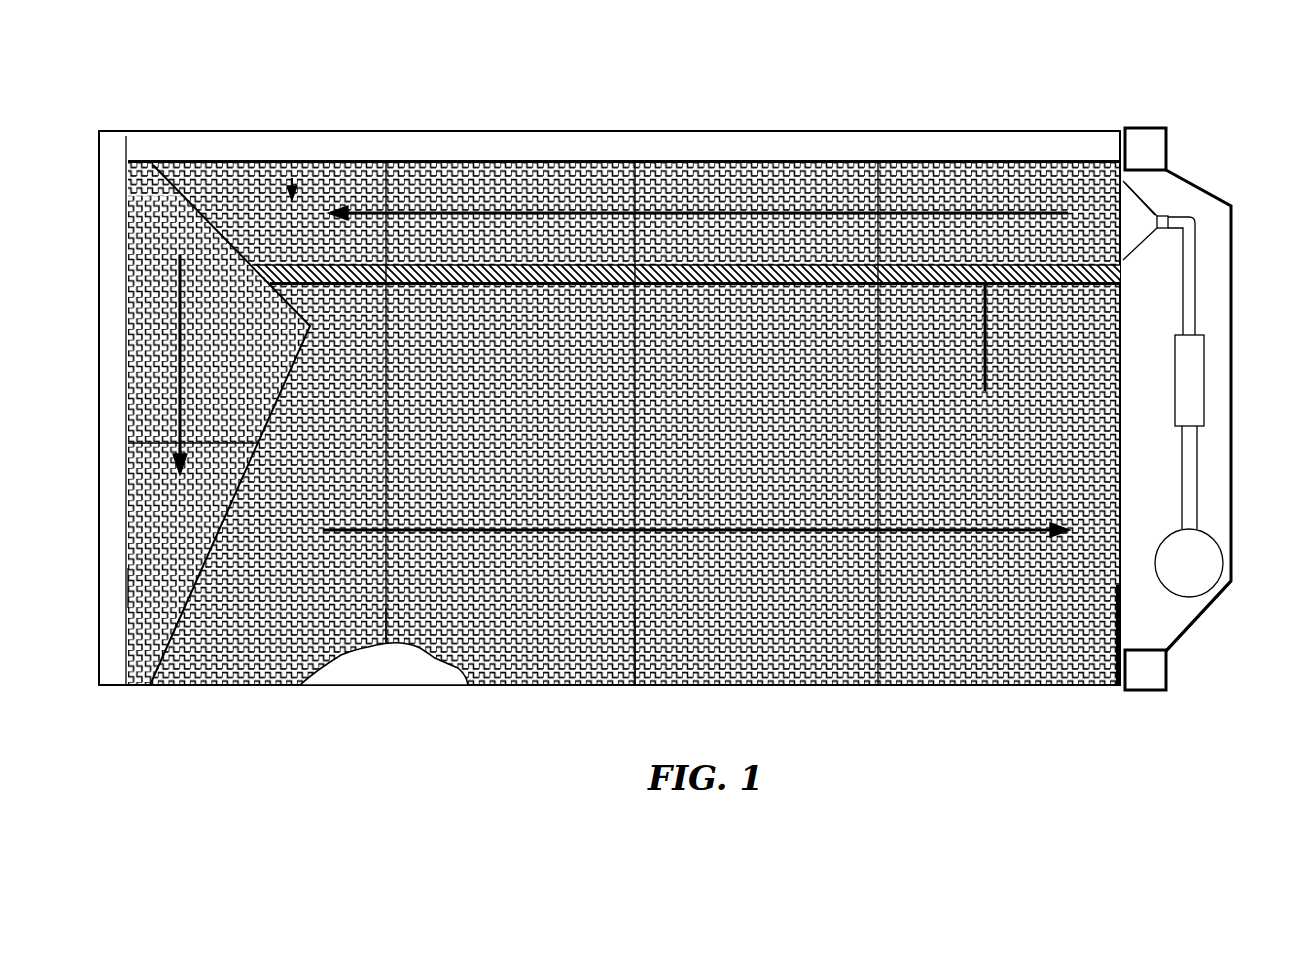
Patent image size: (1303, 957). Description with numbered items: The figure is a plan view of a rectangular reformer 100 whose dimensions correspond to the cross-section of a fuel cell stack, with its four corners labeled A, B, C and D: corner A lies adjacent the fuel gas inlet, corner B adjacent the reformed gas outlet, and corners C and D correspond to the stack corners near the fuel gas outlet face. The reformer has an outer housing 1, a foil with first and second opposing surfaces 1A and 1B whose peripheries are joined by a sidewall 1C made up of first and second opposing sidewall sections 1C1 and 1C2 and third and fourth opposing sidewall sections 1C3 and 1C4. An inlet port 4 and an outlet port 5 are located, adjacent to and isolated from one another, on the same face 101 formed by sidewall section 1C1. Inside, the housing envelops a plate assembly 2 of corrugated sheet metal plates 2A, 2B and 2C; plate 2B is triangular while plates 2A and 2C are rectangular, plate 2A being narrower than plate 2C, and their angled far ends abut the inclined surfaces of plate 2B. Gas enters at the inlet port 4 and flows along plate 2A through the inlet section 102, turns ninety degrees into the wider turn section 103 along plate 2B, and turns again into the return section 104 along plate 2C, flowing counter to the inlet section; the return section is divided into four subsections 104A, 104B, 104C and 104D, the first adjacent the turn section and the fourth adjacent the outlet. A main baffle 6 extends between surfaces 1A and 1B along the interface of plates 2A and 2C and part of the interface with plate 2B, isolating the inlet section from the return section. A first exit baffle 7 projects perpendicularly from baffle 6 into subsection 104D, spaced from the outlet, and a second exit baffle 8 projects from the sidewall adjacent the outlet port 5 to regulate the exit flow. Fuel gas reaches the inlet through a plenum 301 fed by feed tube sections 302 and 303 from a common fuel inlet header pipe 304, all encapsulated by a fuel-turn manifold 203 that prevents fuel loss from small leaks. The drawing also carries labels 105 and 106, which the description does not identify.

The reformer 100 is at (657, 107).
The inlet section 102 is at (703, 182).
The main baffle 6 is at (797, 270).
The turn section 103 is at (147, 362).
The return section 104 is at (827, 638).
The first subsection of the return section 104A is at (223, 653).
The second subsection of the return section 104B is at (437, 635).
The third subsection of the return section 104C is at (717, 642).
The fourth subsection of the return section 104D is at (940, 635).
The left lower region 105 is at (147, 573).
The bottom edge region 106 is at (793, 678).
The plate assembly 2 is at (284, 172).
The corrugated sheet metal plate 2A is at (470, 182).
The corrugated sheet metal plate 2B is at (140, 270).
The corrugated sheet metal plate 2C is at (553, 620).
The housing 1 is at (330, 677).
The first surface 1A is at (372, 663).
The second surface 1B is at (582, 678).
The sidewall 1C is at (92, 520).
The first sidewall section 1C1 is at (1112, 125).
The second sidewall section 1C2 is at (93, 450).
The third sidewall section 1C3 is at (472, 122).
The fourth sidewall section 1C4 is at (925, 677).
The inlet port 4 is at (1110, 178).
The outlet port 5 is at (1115, 498).
The first directing exit baffle 7 is at (977, 350).
The second directing exit baffle 8 is at (1105, 630).
The face 101 is at (1113, 285).
The plenum 301 is at (1140, 188).
The feed tube section 302 is at (1190, 475).
The feed tube section 303 is at (1183, 268).
The common fuel inlet header pipe 304 is at (1197, 547).
The fuel-turn manifold 203 is at (1190, 613).
The corner A is at (1093, 150).
The corner B is at (1113, 687).
The corner C is at (120, 680).
The corner D is at (120, 152).